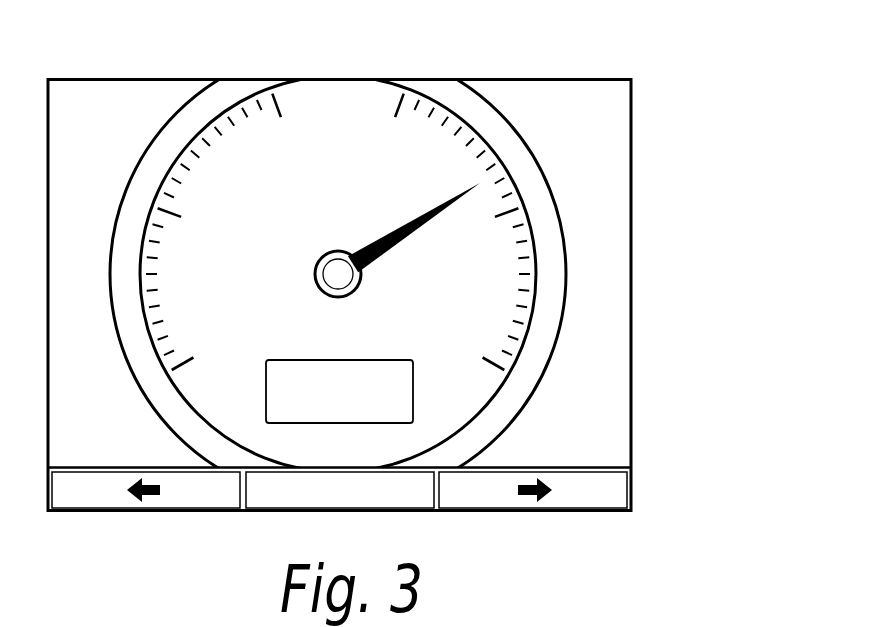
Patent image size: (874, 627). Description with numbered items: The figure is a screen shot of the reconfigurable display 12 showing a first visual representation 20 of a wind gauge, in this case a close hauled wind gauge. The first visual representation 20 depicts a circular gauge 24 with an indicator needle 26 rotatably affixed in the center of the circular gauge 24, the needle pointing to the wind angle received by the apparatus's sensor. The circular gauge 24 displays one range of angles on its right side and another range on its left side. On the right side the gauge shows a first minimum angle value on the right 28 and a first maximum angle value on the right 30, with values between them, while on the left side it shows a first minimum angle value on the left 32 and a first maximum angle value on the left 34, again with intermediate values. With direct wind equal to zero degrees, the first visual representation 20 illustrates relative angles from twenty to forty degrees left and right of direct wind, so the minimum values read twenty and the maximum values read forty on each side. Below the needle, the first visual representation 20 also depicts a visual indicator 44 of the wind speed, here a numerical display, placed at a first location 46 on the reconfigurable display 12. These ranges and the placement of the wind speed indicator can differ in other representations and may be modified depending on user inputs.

The reconfigurable display 12 is at (632, 375).
The first visual representation 20 is at (718, 70).
The circular gauge 24 is at (147, 153).
The indicator needle 26 is at (397, 249).
The first minimum angle value on the right 28 is at (376, 128).
The first maximum angle value on the right 30 is at (460, 354).
The first minimum angle value on the left 32 is at (273, 126).
The first maximum angle value on the left 34 is at (235, 333).
The visual indicator of the wind speed 44 is at (378, 360).
The first location 46 is at (300, 423).